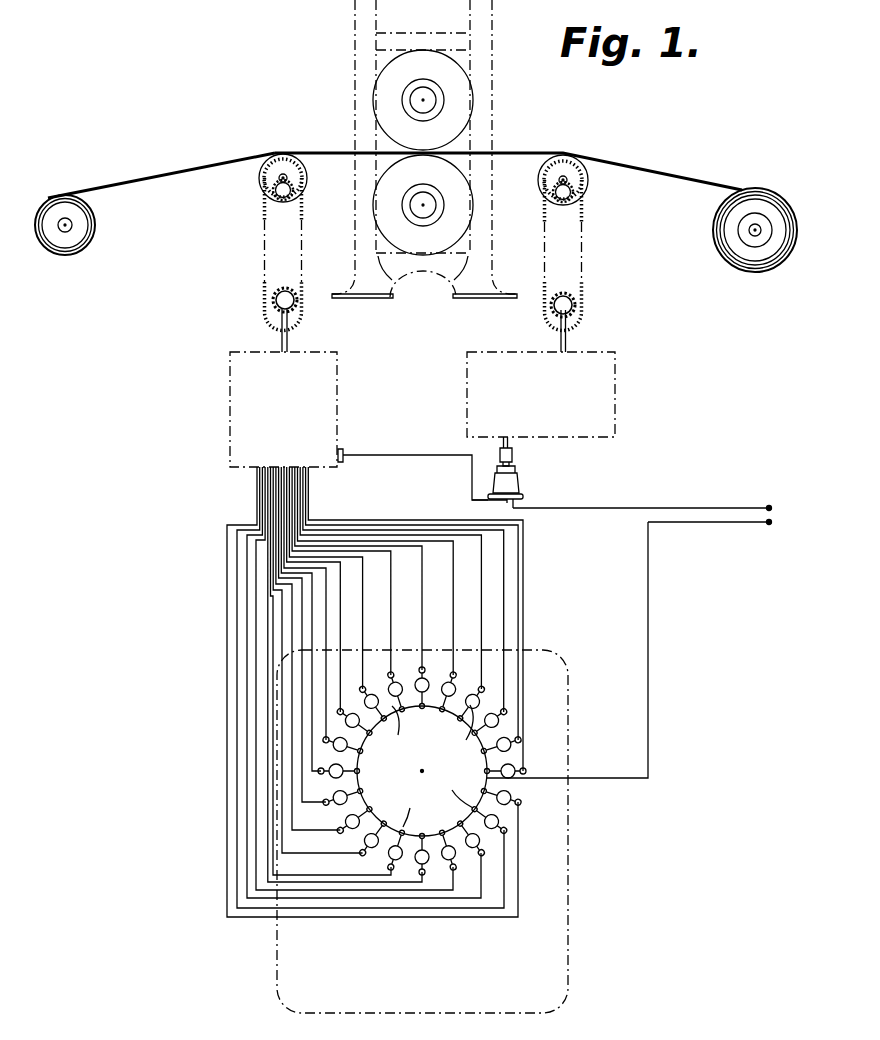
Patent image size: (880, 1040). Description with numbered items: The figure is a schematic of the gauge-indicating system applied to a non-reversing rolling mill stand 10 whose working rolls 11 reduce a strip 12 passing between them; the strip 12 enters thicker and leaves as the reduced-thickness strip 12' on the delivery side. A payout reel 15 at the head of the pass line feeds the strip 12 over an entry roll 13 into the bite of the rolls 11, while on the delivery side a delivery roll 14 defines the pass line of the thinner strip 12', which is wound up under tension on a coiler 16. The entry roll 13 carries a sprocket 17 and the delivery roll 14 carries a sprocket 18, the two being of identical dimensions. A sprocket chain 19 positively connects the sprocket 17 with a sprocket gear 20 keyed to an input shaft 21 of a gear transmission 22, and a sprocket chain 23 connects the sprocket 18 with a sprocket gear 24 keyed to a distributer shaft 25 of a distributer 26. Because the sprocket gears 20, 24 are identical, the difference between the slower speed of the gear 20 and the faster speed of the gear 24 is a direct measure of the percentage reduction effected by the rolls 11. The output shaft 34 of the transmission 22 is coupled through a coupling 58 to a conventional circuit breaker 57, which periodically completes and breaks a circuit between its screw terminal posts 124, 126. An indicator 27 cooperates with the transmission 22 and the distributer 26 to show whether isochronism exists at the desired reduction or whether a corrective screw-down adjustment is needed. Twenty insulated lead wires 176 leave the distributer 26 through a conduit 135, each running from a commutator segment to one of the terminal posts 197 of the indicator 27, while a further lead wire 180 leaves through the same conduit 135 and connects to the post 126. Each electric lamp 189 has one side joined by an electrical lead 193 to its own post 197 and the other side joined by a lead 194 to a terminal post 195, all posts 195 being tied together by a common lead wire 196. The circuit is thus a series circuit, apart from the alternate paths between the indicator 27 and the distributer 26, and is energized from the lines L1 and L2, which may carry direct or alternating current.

The non-reversing rolling mill stand 10 is at (505, 70).
The working rolls 11 is at (387, 87).
The strip 12 is at (508, 157).
The reduced-thickness strip 12' is at (183, 152).
The entry roll 13 is at (589, 180).
The delivery roll 14 is at (259, 178).
The payout reel 15 is at (743, 228).
The coiler 16 is at (80, 218).
The sprocket 17 is at (558, 190).
The sprocket 18 is at (275, 195).
The sprocket chain 19 is at (583, 284).
The sprocket gear 20 is at (555, 310).
The input shaft 21 is at (566, 334).
The gear transmission 22 is at (616, 380).
The sprocket chain 23 is at (265, 290).
The sprocket gear 24 is at (277, 302).
The distributer shaft 25 is at (282, 334).
The distributer 26 is at (230, 378).
The indicator 27 is at (560, 650).
The output shaft 34 is at (508, 442).
The circuit breaker 57 is at (512, 482).
The coupling 58 is at (513, 455).
The screw terminal post 124 is at (523, 497).
The screw terminal post 126 is at (487, 498).
The conduit 135 is at (343, 450).
The lead wires 176 is at (298, 503).
The electrical lead wire 180 is at (427, 468).
The electric lamp 189 is at (506, 833).
The electrical lead 193 is at (473, 734).
The electrical lead 194 is at (373, 728).
The terminal post 195 is at (369, 809).
The common electrical lead wire 196 is at (456, 790).
The terminal post 197 is at (451, 871).
The line L1 is at (697, 508).
The line L2 is at (685, 522).